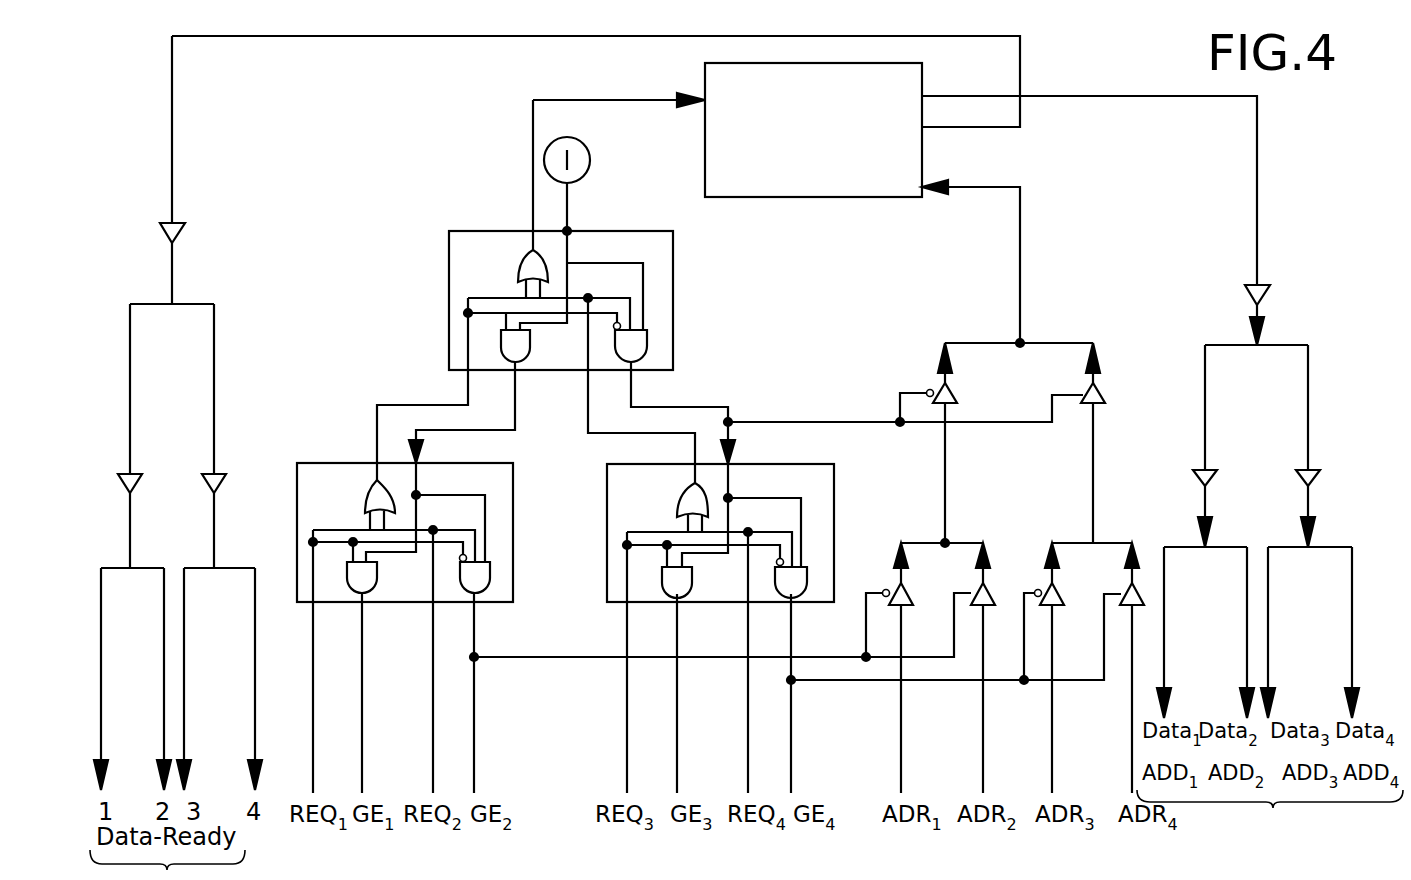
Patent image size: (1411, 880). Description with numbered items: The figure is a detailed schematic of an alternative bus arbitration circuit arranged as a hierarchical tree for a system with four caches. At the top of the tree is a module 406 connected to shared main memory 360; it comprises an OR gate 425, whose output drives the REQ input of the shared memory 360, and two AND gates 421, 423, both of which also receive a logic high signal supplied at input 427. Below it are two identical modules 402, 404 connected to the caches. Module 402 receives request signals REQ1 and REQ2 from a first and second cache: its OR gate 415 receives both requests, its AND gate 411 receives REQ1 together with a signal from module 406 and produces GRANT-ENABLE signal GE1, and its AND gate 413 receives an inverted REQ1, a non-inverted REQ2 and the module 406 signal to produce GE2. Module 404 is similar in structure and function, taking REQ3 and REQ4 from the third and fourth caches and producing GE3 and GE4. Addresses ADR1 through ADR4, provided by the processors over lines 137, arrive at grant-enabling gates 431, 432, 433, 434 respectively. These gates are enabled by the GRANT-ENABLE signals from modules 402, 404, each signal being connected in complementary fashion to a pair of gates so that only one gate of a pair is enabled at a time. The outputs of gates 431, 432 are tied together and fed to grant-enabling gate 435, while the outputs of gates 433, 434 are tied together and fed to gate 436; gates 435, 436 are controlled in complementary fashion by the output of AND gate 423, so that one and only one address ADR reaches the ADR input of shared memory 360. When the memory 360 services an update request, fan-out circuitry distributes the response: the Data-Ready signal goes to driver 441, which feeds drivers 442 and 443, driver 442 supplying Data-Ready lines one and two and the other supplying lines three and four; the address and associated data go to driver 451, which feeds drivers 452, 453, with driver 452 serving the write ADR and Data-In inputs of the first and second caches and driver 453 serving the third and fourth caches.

The shared main memory 360 is at (842, 197).
The module 402 is at (324, 466).
The module 404 is at (834, 500).
The module 406 is at (516, 232).
The AND gate 411 is at (362, 582).
The AND gate 413 is at (475, 580).
The OR gate 415 is at (366, 500).
The AND gate 421 is at (515, 348).
The AND gate 423 is at (632, 348).
The OR gate 425 is at (518, 280).
The input 427 is at (588, 170).
The grant-enabling gate 431 is at (908, 594).
The grant-enabling gate 432 is at (990, 594).
The grant-enabling gate 433 is at (1060, 594).
The grant-enabling gate 434 is at (1142, 598).
The grant-enabling gate 435 is at (962, 384).
The grant-enabling gate 436 is at (1111, 386).
The driver 441 is at (178, 226).
The driver 442 is at (134, 472).
The driver 443 is at (218, 472).
The driver 451 is at (1266, 294).
The driver 452 is at (1192, 478).
The driver 453 is at (1295, 478).
The lines 137 is at (984, 750).